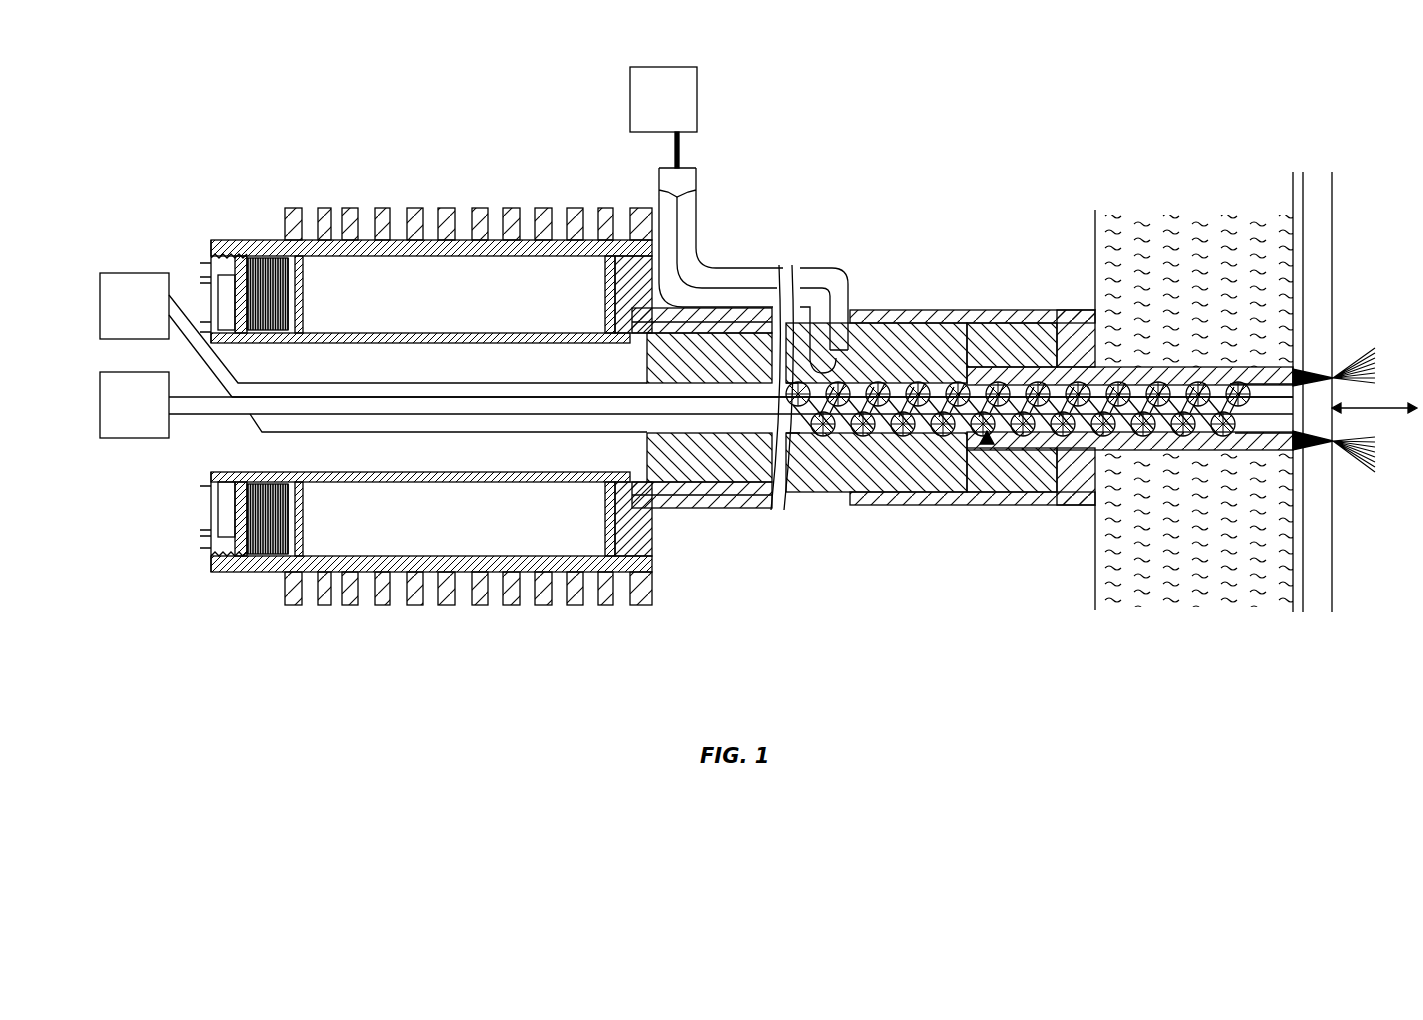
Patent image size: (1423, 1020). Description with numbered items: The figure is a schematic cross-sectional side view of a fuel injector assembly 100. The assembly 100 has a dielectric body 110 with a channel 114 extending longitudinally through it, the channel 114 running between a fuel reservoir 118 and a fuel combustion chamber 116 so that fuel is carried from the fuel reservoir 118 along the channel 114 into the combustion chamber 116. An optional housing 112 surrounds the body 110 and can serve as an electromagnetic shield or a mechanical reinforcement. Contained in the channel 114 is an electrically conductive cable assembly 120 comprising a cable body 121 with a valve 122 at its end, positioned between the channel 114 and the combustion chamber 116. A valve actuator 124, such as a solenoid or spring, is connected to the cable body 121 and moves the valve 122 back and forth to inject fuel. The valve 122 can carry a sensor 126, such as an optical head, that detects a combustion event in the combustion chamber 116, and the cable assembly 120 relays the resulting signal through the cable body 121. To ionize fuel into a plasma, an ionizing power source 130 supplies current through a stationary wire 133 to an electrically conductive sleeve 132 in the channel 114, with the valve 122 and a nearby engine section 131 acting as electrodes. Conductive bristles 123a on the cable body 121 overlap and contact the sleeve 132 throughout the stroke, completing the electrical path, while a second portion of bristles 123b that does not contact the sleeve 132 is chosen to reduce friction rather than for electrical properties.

The fuel injector assembly 100 is at (1221, 56).
The dielectric body 110 is at (1013, 350).
The housing 112 is at (933, 318).
The channel 114 is at (1088, 438).
The fuel combustion chamber 116 is at (1374, 392).
The fuel reservoir 118 is at (120, 280).
The electrically conductive cable assembly 120 is at (987, 444).
The cable body 121 is at (690, 410).
The valve 122 is at (1313, 462).
The first portion of bristles 123a is at (885, 437).
The second portion of bristles 123b is at (1148, 436).
The valve actuator 124 is at (115, 428).
The sensor 126 is at (1360, 400).
The ionizing power source 130 is at (683, 82).
The engine section 131 is at (1280, 228).
The electrically conductive sleeve 132 is at (888, 380).
The wire 133 is at (717, 288).